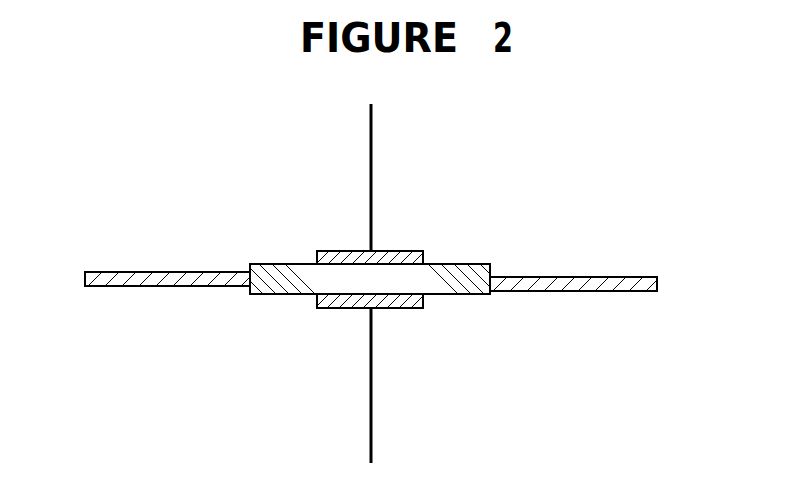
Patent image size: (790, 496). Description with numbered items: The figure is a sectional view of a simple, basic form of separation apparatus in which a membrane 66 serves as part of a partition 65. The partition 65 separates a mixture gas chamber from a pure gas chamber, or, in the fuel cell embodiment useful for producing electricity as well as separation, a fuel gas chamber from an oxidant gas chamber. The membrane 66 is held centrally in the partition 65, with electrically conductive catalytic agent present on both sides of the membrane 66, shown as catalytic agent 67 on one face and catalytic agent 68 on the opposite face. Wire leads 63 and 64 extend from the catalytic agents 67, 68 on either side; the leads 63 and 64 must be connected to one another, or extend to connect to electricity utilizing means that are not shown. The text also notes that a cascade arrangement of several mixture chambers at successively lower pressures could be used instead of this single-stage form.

The wire lead 63 is at (373, 162).
The wire lead 64 is at (370, 413).
The partition 65 is at (135, 285).
The membrane 66 is at (445, 264).
The catalytic agent 67 is at (342, 308).
The catalytic agent 68 is at (353, 252).